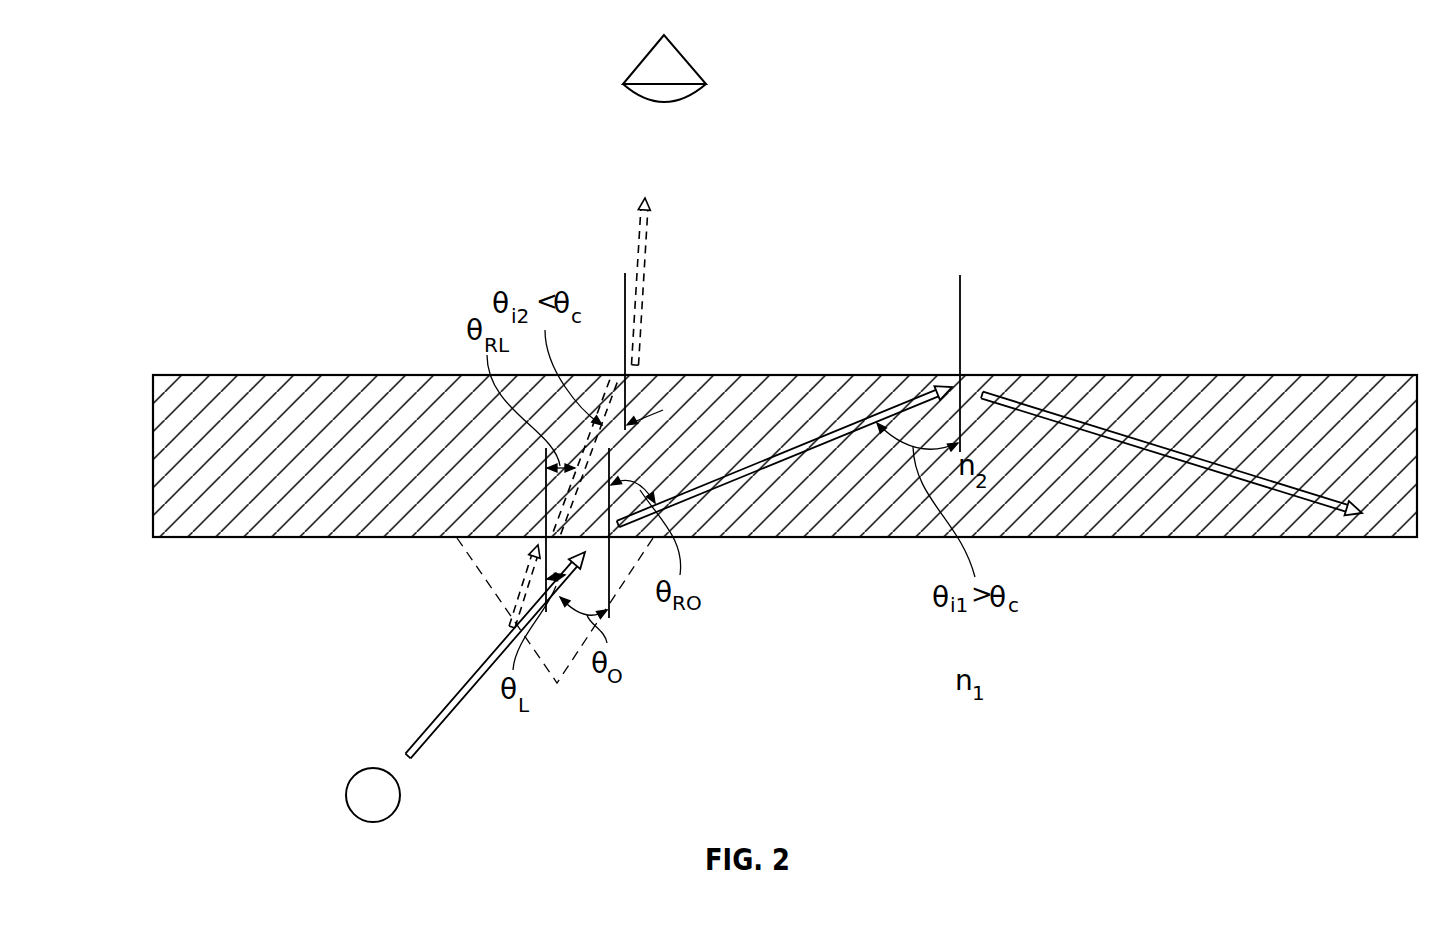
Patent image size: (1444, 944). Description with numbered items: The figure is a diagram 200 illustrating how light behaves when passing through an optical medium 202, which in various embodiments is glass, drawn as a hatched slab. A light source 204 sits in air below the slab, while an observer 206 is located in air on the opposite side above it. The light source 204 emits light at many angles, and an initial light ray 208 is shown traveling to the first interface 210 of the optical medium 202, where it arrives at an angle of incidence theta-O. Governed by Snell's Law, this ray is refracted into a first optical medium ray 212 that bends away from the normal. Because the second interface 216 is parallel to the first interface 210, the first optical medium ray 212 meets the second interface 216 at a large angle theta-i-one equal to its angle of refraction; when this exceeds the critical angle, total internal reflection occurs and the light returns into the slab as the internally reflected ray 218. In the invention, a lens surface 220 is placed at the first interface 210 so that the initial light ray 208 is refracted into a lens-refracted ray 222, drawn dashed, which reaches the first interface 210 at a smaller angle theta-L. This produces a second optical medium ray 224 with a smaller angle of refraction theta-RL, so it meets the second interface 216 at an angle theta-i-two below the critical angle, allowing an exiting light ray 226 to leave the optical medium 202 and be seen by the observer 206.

The diagram 200 is at (1355, 87).
The optical medium 202 is at (152, 447).
The light source 204 is at (346, 797).
The observer 206 is at (706, 84).
The initial light ray 208 is at (453, 715).
The first interface 210 is at (1195, 538).
The first optical medium ray 212 is at (932, 385).
The second interface 216 is at (1210, 374).
The internally reflected ray 218 is at (1122, 432).
The lens surface 220 is at (528, 573).
The lens-refracted ray 222 is at (523, 583).
The second optical medium ray 224 is at (627, 396).
The exiting light ray 226 is at (645, 287).